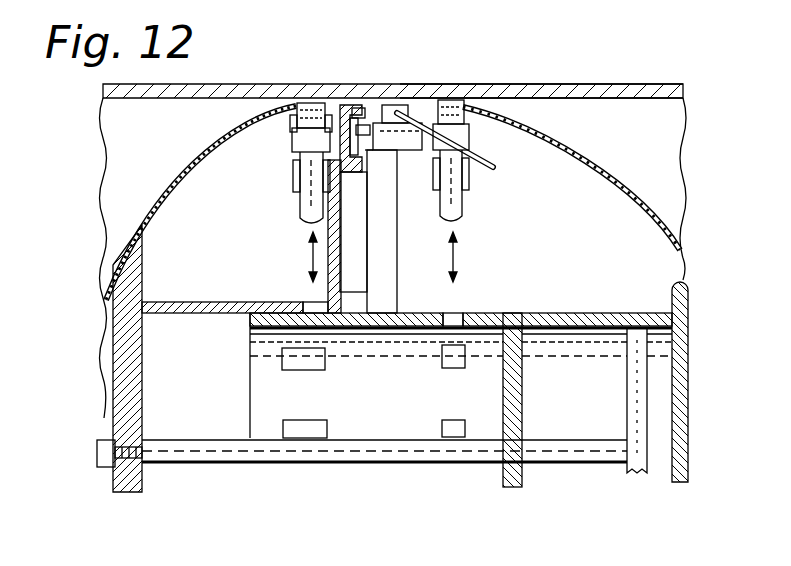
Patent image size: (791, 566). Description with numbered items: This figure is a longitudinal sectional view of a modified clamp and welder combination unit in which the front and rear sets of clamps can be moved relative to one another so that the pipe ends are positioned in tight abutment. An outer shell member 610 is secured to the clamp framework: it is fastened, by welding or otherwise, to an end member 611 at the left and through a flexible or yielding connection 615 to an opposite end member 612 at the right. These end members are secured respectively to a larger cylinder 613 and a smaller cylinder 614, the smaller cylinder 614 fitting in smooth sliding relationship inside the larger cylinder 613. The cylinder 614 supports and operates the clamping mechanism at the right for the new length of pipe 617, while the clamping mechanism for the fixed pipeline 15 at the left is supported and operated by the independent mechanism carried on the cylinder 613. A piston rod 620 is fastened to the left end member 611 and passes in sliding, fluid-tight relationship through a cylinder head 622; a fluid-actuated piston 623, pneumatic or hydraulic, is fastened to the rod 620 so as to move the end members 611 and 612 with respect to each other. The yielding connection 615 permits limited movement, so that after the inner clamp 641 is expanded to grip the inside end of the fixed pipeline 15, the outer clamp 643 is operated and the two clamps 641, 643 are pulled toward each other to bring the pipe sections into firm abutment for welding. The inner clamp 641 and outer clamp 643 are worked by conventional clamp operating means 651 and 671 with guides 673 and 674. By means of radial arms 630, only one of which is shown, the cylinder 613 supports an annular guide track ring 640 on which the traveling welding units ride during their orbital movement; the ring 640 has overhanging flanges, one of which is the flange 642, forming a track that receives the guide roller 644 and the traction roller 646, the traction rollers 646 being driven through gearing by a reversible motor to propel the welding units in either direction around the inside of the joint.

The fixed pipeline 15 is at (239, 86).
The new length of pipe 617 is at (508, 86).
The outer shell member 610 is at (198, 166).
The flexible connection 615 is at (684, 258).
The end member 611 is at (144, 262).
The opposite end member 612 is at (690, 290).
The cylinder 613 is at (191, 302).
The cylinder 614 is at (511, 313).
The cylinder head 622 is at (520, 390).
The piston 623 is at (632, 413).
The piston rod 620 is at (178, 438).
The radial arm 630 is at (328, 285).
The traction roller 646 is at (296, 160).
The inner clamp 641 is at (293, 142).
The clamp operating means 651 is at (297, 208).
The guide 673 is at (294, 183).
The annular guide track ring 640 is at (346, 122).
The guide roller 644 is at (349, 102).
The overhanging flange 642 is at (368, 167).
The outer clamp 643 is at (472, 138).
The guide 674 is at (470, 190).
The clamp operating means 671 is at (464, 222).